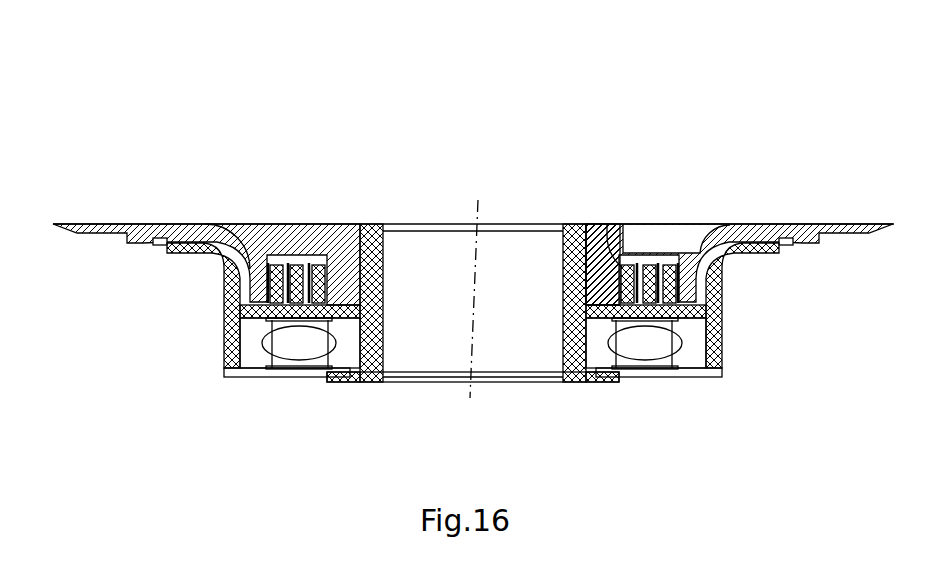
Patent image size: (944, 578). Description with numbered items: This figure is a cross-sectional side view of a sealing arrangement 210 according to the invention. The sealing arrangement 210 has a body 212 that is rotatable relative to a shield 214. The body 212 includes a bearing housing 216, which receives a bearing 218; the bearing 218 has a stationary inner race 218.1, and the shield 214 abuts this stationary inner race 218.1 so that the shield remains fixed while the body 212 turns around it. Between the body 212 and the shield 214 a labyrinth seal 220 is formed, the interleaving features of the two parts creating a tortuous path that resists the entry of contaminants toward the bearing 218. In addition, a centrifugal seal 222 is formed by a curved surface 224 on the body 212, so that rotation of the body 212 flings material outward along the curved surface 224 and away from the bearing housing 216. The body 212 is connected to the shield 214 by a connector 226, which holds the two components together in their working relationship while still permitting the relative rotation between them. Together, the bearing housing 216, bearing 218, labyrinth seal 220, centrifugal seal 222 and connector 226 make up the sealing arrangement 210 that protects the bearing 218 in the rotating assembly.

The sealing arrangement 210 is at (706, 172).
The body 212 is at (713, 292).
The shield 214 is at (708, 245).
The bearing housing 216 is at (694, 342).
The bearing 218 is at (647, 352).
The stationary inner race 218.1 is at (660, 373).
The labyrinth seal 220 is at (612, 255).
The centrifugal seal 222 is at (203, 256).
The curved surface 224 is at (212, 263).
The connector 226 is at (381, 340).